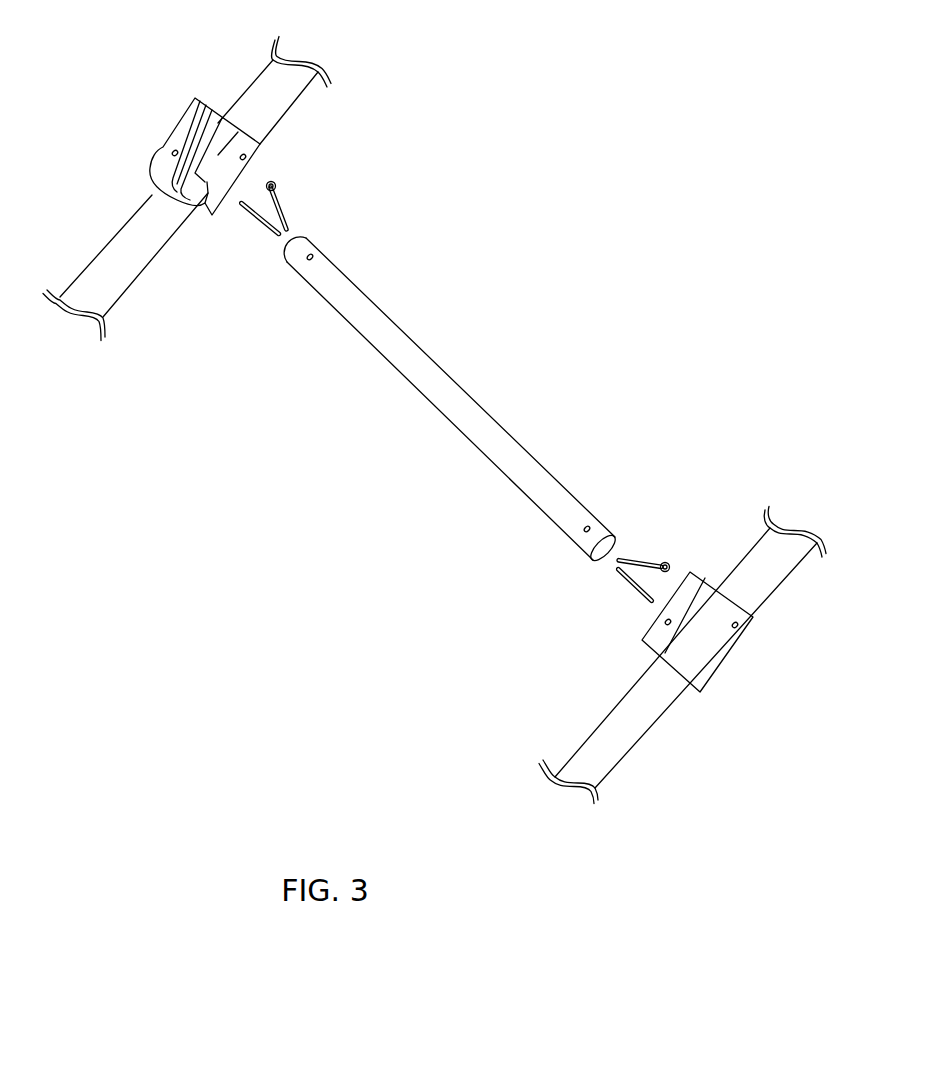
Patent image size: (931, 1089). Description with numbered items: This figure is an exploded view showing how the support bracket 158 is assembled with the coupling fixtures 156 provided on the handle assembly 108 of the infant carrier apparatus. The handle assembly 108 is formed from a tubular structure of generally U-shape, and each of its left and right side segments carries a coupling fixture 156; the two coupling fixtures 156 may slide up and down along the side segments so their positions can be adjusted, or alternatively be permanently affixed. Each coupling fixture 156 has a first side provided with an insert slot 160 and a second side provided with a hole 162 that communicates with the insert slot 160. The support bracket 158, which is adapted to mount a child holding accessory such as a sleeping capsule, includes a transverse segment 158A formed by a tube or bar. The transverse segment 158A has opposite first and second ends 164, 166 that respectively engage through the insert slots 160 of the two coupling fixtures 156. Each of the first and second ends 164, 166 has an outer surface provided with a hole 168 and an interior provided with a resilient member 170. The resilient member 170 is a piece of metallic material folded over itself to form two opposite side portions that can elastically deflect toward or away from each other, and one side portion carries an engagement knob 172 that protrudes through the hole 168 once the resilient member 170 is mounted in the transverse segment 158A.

The handle assembly 108 is at (270, 87).
The coupling fixture 156 is at (192, 122).
The support bracket 158 is at (469, 377).
The transverse segment 158A is at (448, 376).
The insert slot 160 is at (210, 211).
The hole 162 is at (172, 153).
The first end 164 is at (295, 272).
The second end 166 is at (568, 540).
The hole 168 is at (312, 256).
The resilient member 170 is at (286, 216).
The engagement knob 172 is at (276, 183).